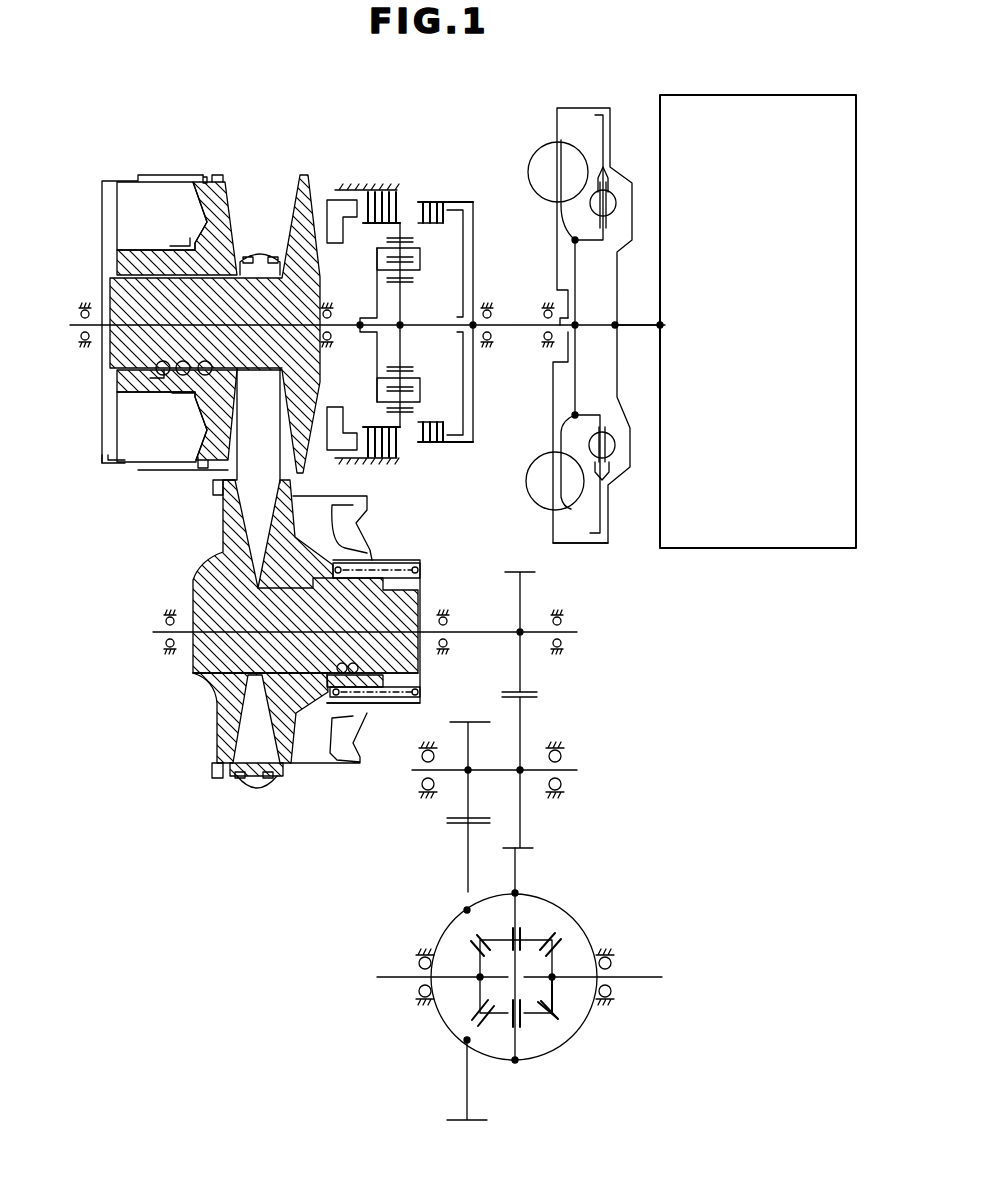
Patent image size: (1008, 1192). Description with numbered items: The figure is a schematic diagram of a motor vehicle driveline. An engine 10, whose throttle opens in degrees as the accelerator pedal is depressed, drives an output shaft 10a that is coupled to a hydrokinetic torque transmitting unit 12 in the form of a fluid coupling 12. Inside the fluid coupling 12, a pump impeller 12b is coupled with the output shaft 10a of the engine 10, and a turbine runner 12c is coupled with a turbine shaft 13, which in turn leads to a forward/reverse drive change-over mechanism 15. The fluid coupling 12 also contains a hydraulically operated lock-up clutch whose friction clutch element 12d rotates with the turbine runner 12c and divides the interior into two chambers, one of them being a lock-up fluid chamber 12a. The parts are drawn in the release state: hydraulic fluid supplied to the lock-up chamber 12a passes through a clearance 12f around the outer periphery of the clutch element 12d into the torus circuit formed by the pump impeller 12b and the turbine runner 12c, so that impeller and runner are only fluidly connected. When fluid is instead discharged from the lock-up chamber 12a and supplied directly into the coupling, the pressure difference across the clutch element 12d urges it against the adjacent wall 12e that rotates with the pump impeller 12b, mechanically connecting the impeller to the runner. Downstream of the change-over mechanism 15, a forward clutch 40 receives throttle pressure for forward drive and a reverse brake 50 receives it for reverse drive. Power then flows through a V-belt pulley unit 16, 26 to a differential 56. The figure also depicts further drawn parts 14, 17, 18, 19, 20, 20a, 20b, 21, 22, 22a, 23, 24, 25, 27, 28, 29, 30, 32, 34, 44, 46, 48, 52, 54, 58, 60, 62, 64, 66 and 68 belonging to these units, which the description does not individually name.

The engine 10 is at (730, 93).
The output shaft 10a is at (636, 328).
The hydrokinetic torque transmitting unit 12 is at (581, 102).
The lock-up fluid chamber 12a is at (605, 395).
The pump impeller 12b is at (552, 470).
The turbine runner 12c is at (557, 458).
The friction clutch element 12d is at (607, 145).
The adjacent wall 12e is at (607, 122).
The clearance 12f is at (599, 546).
The turbine shaft 13 is at (519, 328).
The carrier 14 is at (352, 327).
The forward/reverse drive change-over mechanism 15 is at (372, 173).
The V-belt pulley unit 16 is at (300, 166).
The ring gear housing 17 is at (436, 264).
The rotor 18 is at (305, 188).
The sun gear shaft 19 is at (404, 342).
The motor housing 20 is at (132, 190).
The housing end wall 20a is at (108, 464).
The housing flange 20b is at (206, 178).
The planet gear 21 is at (408, 367).
The stud 22 is at (221, 173).
The armature 22a is at (227, 186).
The planet gear 23 is at (413, 393).
The motor shaft 24 is at (221, 468).
The gear 25 is at (377, 365).
The V-belt pulley unit 26 is at (242, 794).
The gear 27 is at (403, 414).
The axle 28 is at (488, 634).
The hub 29 is at (191, 566).
The hub body 30 is at (226, 720).
The carrier plate 32 is at (316, 760).
The bearing 34 is at (291, 772).
The forward clutch 40 is at (443, 182).
The output shaft 44 is at (484, 1121).
The input shaft 46 is at (513, 570).
The differential shaft 48 is at (518, 815).
The reverse brake 50 is at (401, 190).
The countershaft 52 is at (535, 766).
The intermediate shaft 54 is at (466, 796).
The differential 56 is at (580, 909).
The bevel gear 58 is at (540, 1016).
The bevel gear 60 is at (491, 937).
The bevel gear 62 is at (478, 1004).
The bevel gear 64 is at (550, 957).
The left axle 66 is at (388, 978).
The right axle 68 is at (648, 978).